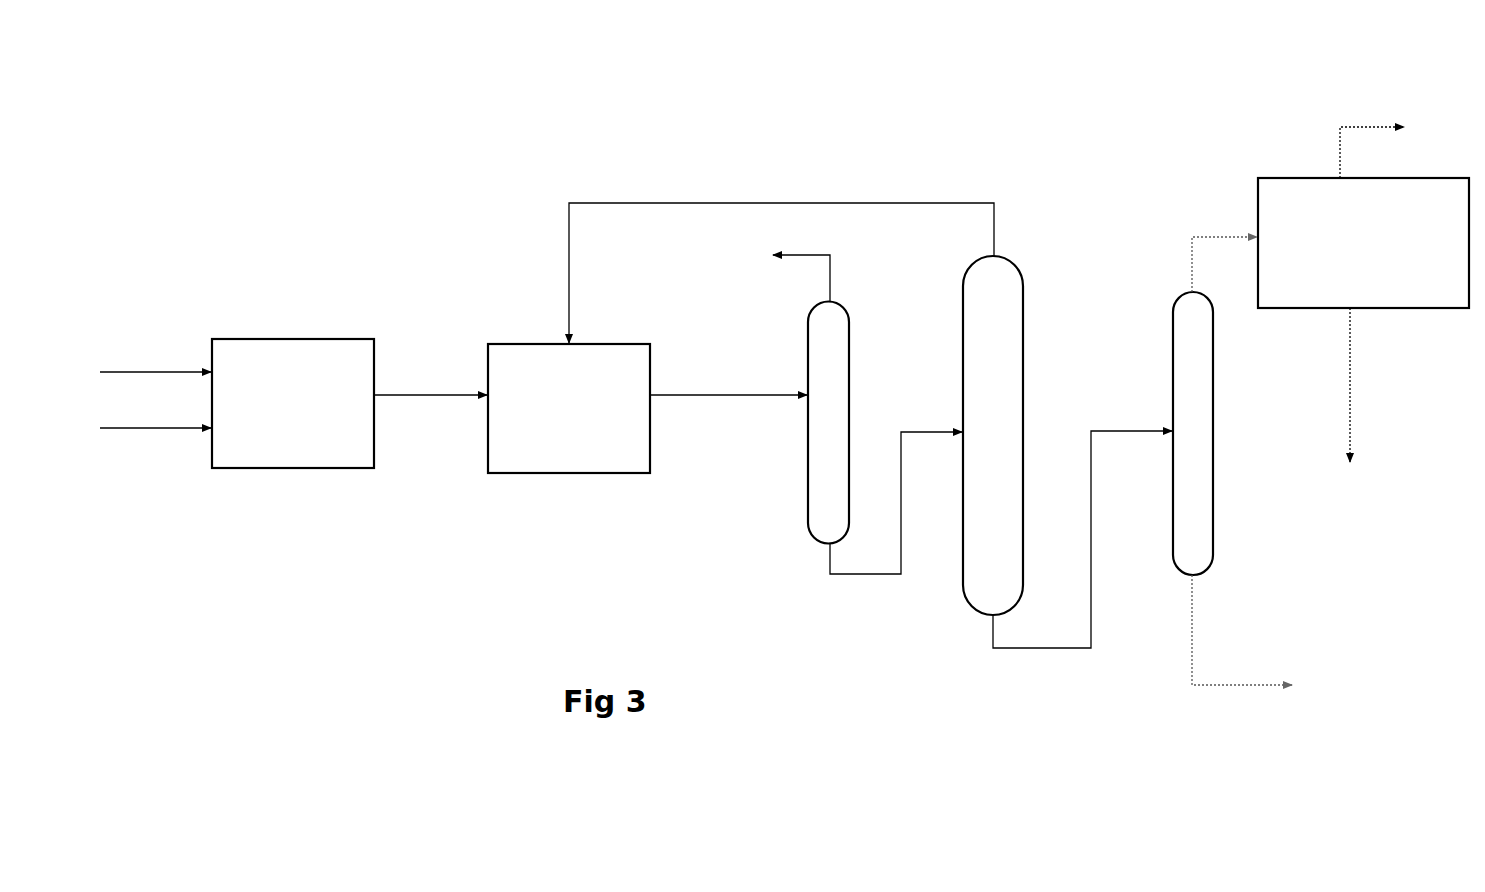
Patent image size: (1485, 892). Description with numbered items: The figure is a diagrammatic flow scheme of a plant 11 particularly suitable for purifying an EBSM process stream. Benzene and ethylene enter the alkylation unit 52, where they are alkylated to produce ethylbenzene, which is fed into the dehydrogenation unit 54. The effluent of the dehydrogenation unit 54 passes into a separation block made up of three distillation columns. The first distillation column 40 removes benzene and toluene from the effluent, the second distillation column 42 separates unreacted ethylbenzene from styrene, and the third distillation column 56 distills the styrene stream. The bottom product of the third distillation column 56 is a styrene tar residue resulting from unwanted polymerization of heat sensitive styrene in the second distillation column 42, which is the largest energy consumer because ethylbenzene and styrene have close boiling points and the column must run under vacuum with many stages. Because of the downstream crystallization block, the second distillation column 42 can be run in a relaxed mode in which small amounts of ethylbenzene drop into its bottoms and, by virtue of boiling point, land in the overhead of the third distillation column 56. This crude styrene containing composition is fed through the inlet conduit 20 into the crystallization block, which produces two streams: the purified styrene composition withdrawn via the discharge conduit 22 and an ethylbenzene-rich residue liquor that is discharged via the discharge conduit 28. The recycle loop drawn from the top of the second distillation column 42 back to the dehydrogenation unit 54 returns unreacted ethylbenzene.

The plant 11 is at (442, 561).
The inlet conduit 20 is at (1215, 236).
The discharge conduit 22 is at (1363, 180).
The discharge conduit 28 is at (1352, 355).
The first distillation column 40 is at (808, 519).
The second distillation column 42 is at (1024, 267).
The alkylation unit 52 is at (292, 338).
The dehydrogenation unit 54 is at (530, 343).
The third distillation column 56 is at (1213, 500).